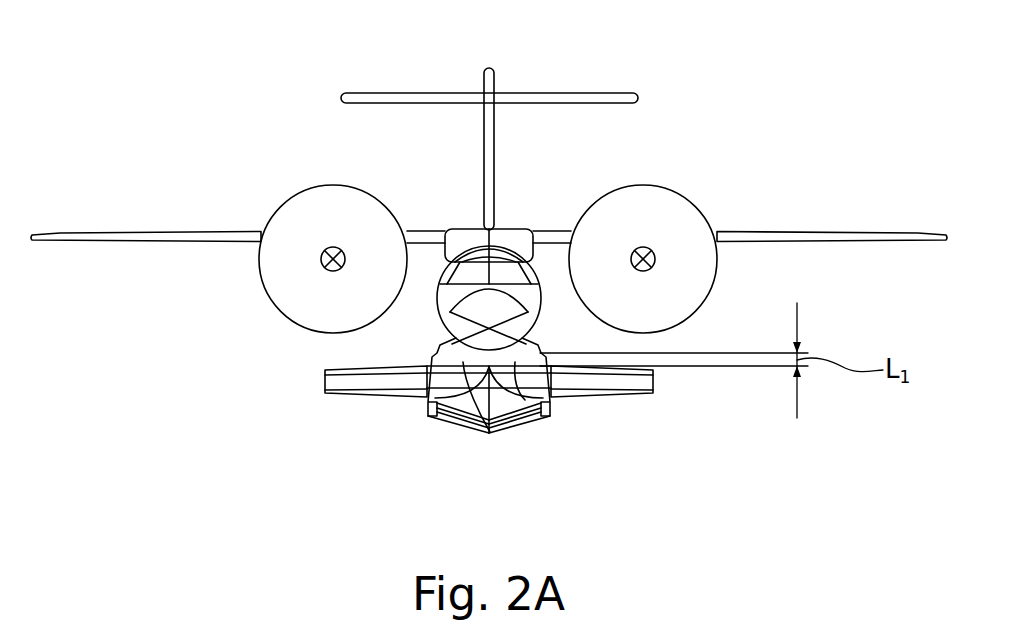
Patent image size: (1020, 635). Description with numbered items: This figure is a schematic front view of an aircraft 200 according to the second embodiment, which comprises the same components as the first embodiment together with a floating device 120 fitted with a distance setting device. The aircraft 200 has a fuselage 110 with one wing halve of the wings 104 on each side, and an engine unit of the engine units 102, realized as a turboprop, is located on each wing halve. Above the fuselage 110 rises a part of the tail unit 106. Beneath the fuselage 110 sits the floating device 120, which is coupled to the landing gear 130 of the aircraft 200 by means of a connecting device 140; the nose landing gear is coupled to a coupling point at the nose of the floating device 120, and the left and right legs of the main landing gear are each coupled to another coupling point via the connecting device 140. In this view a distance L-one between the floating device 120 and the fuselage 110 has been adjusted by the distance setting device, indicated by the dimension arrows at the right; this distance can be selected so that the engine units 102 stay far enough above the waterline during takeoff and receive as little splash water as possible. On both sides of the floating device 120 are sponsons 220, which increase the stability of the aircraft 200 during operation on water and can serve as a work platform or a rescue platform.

The aircraft 200 is at (288, 120).
The engine units 102 is at (643, 185).
The wings 104 is at (162, 231).
The tail unit 106 is at (492, 100).
The fuselage 110 is at (490, 432).
The floating device 120 is at (408, 434).
The landing gear 130 is at (426, 355).
The connecting device 140 is at (550, 410).
The sponsons 220 is at (340, 397).